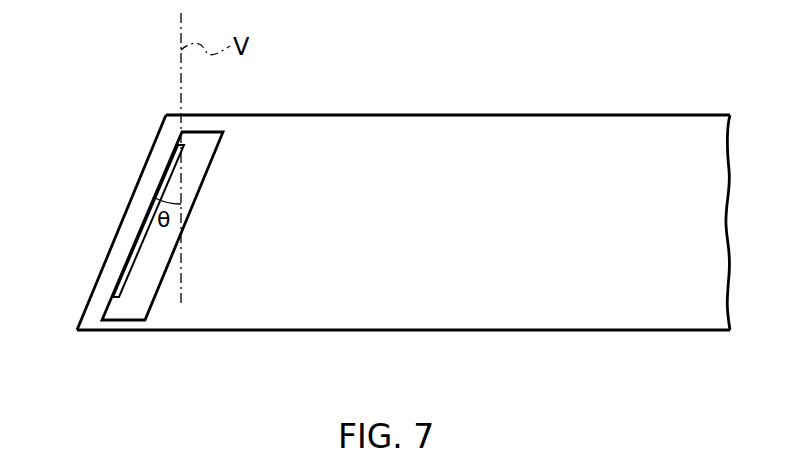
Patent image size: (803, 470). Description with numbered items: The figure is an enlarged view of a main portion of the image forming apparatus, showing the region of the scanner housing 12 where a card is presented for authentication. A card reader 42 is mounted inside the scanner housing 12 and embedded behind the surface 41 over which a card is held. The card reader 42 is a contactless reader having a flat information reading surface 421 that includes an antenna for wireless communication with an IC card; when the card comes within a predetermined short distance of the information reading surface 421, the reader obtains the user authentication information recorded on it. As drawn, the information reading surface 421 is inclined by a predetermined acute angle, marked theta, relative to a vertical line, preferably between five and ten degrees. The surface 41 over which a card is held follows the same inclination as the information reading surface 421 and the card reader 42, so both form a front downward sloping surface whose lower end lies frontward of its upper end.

The scanner housing 12 is at (458, 116).
The surface over which a card is held 41 is at (146, 165).
The card reader 42 is at (201, 188).
The information reading surface 421 is at (128, 265).